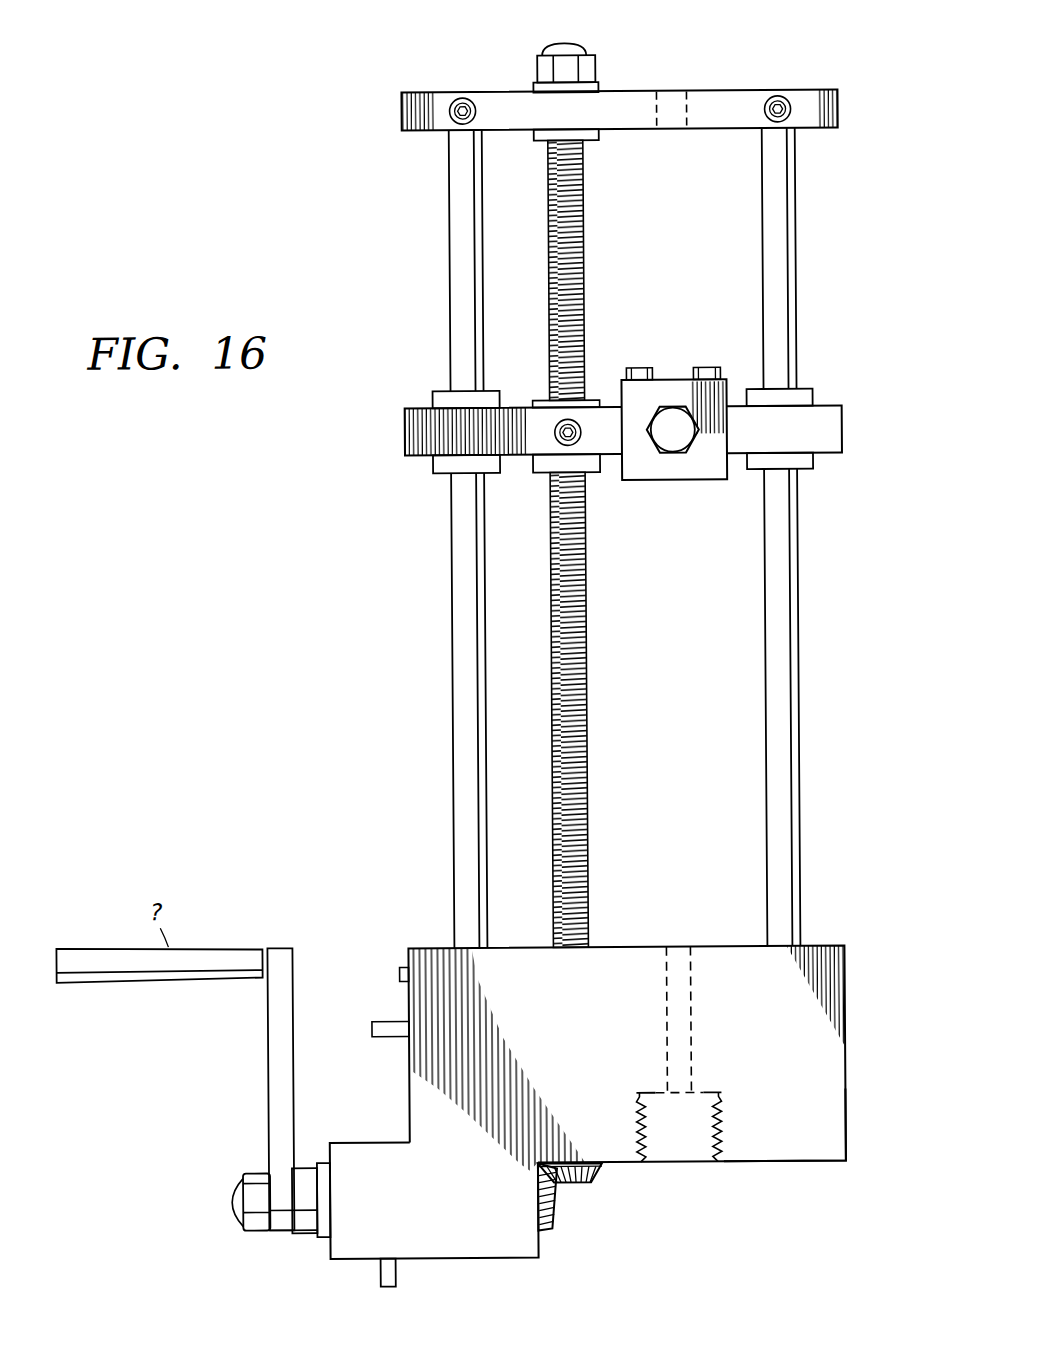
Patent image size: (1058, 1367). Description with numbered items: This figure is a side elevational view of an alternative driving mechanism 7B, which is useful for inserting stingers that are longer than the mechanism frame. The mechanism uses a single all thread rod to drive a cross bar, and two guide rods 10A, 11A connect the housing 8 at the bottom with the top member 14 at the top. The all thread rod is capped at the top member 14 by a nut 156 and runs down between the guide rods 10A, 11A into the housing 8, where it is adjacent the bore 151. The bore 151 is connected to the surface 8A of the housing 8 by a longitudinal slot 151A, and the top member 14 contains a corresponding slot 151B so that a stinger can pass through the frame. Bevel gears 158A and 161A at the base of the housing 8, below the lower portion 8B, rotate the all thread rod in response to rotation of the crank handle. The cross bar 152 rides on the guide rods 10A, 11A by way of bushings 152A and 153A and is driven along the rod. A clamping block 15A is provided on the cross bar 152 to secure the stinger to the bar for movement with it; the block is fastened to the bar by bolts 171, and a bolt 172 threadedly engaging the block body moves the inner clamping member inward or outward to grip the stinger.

The top member 14 is at (827, 92).
The cap nut 156 is at (551, 46).
The slot 151B is at (687, 117).
The driving mechanism 7B is at (828, 253).
The guide rod 10A is at (452, 660).
The guide rod 11A is at (795, 665).
The movable cross bar 152 is at (542, 470).
The left bushing 152A is at (439, 469).
The right bushing 153A is at (813, 473).
The clamping block 15A is at (729, 388).
The bolts 171 is at (643, 368).
The bolt 172 is at (673, 440).
The housing 8 is at (843, 1066).
The surface 8A is at (816, 1120).
The longitudinal slot 151A is at (670, 965).
The bore 151 is at (685, 1050).
The bevel gear 161A is at (592, 1183).
The bevel gear 158A is at (553, 1228).
The gear housing 8B is at (523, 1258).